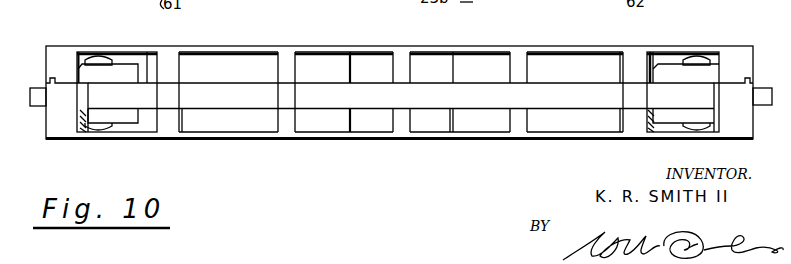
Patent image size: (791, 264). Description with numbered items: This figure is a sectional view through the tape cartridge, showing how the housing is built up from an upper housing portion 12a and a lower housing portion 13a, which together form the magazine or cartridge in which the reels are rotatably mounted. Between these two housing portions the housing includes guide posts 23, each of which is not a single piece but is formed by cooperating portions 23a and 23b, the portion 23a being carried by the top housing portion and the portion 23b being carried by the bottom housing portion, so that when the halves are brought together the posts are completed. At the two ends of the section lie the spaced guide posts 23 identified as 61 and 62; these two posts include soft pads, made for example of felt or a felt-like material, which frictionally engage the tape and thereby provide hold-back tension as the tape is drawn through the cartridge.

The upper housing portion 12a is at (295, 44).
The lower housing portion 13a is at (233, 140).
The guide post 23 is at (297, 112).
The guide post portion 23a is at (517, 60).
The guide post portion 23b is at (520, 120).
The guide post 61 is at (163, 131).
The guide post 62 is at (634, 131).